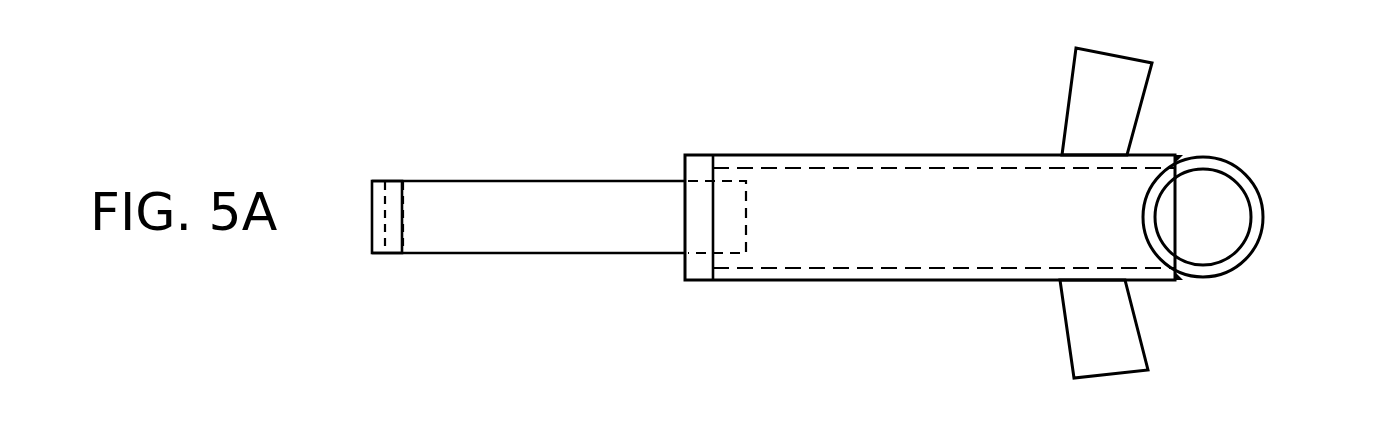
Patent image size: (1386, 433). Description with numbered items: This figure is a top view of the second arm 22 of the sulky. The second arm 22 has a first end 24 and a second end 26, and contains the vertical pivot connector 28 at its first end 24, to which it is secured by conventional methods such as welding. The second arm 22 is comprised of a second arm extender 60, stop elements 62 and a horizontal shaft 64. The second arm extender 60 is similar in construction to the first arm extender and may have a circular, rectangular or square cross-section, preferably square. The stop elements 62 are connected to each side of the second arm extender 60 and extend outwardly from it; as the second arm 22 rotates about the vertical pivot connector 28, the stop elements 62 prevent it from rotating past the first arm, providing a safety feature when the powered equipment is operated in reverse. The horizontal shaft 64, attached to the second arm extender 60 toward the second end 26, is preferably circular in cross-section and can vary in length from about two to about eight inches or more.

The second arm 22 is at (787, 151).
The first end 24 is at (1265, 197).
The second end 26 is at (360, 186).
The vertical pivot connector 28 is at (1235, 163).
The second arm extender 60 is at (897, 195).
The stop elements 62 is at (1087, 82).
The horizontal shaft 64 is at (528, 205).